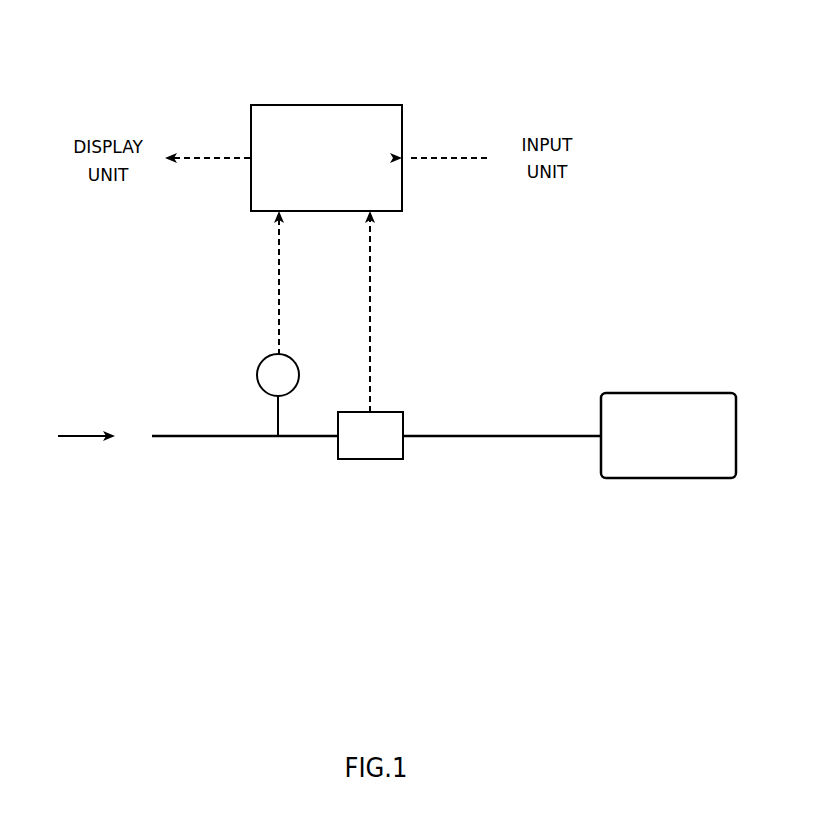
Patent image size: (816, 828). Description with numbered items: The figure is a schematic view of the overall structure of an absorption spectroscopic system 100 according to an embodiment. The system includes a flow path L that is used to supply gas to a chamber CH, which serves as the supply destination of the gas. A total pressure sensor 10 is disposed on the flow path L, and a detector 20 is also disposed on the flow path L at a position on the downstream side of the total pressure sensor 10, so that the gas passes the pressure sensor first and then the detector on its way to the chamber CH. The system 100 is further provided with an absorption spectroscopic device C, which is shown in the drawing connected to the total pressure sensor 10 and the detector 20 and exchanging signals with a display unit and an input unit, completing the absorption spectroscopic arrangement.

The absorption spectroscopic system 100 is at (168, 72).
The total pressure sensor 10 is at (300, 375).
The detector 20 is at (388, 412).
The absorption spectroscopic device C is at (377, 105).
The flow path L is at (475, 435).
The chamber CH is at (682, 393).